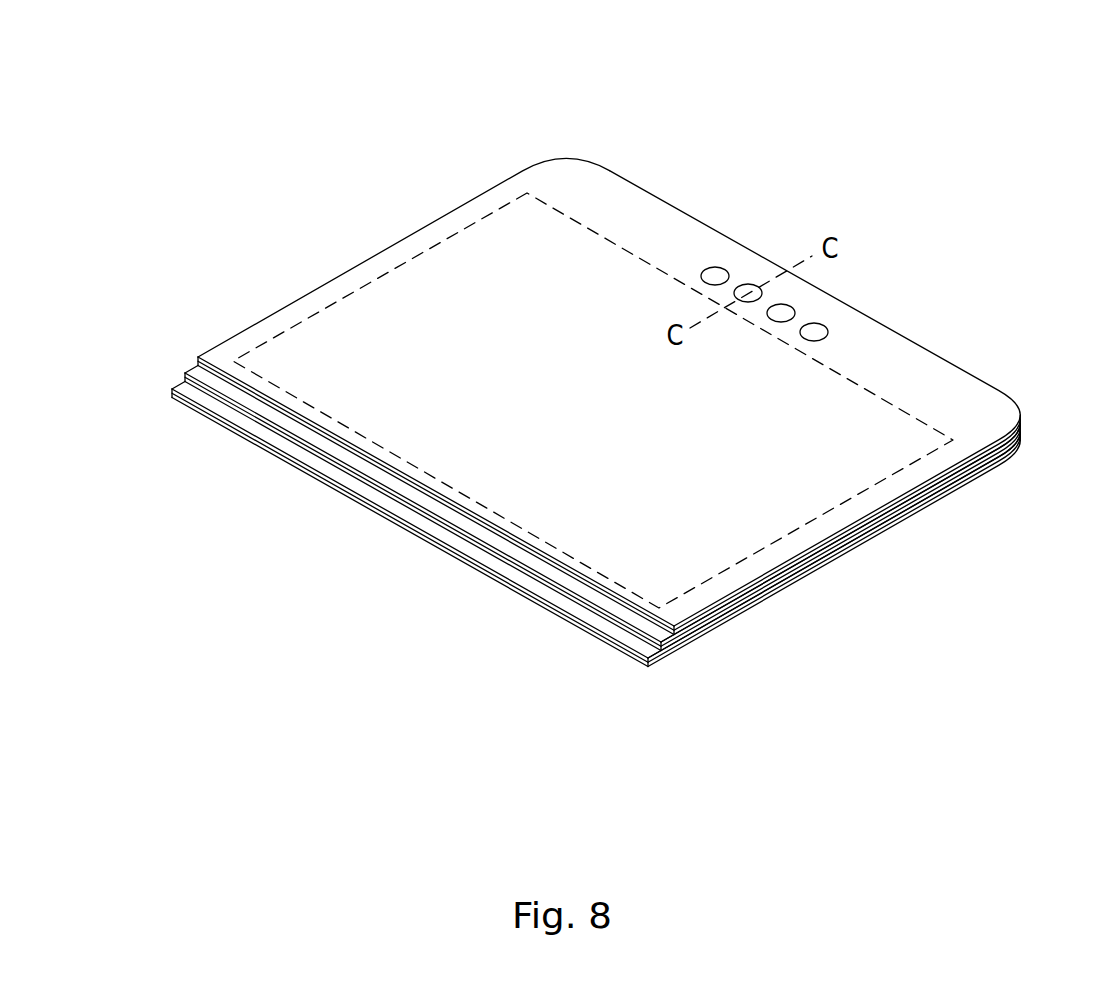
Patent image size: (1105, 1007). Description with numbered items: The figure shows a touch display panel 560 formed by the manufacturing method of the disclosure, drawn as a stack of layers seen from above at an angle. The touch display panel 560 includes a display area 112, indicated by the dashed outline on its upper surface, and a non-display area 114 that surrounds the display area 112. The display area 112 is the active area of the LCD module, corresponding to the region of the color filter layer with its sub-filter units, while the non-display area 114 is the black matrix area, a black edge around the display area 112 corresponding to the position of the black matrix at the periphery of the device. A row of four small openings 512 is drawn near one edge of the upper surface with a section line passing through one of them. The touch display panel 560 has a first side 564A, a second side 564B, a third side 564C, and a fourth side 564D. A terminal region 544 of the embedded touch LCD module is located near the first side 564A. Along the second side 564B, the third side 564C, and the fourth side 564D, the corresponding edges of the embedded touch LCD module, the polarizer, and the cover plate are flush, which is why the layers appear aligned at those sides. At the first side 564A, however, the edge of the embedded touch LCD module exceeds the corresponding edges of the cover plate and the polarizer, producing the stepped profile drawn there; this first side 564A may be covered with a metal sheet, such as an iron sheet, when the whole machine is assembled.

The touch display panel 560 is at (328, 187).
The display area 112 is at (503, 252).
The openings / sensor windows 512 is at (716, 267).
The non-display area 114 is at (982, 422).
The first side 564A is at (295, 467).
The second side 564B is at (267, 316).
The third side 564C is at (930, 347).
The fourth side 564D is at (830, 573).
The terminal region 544 is at (440, 537).